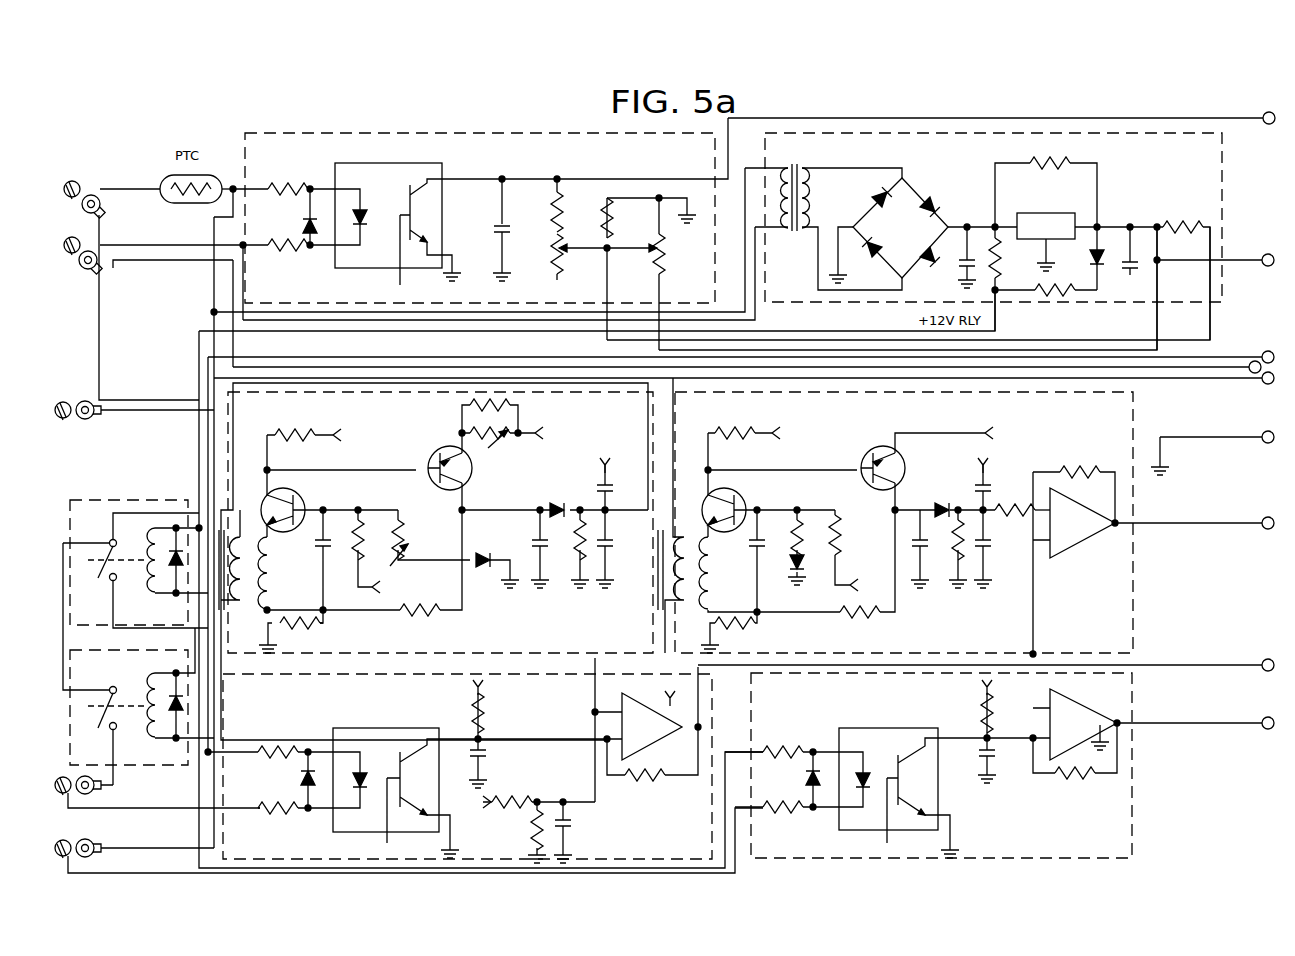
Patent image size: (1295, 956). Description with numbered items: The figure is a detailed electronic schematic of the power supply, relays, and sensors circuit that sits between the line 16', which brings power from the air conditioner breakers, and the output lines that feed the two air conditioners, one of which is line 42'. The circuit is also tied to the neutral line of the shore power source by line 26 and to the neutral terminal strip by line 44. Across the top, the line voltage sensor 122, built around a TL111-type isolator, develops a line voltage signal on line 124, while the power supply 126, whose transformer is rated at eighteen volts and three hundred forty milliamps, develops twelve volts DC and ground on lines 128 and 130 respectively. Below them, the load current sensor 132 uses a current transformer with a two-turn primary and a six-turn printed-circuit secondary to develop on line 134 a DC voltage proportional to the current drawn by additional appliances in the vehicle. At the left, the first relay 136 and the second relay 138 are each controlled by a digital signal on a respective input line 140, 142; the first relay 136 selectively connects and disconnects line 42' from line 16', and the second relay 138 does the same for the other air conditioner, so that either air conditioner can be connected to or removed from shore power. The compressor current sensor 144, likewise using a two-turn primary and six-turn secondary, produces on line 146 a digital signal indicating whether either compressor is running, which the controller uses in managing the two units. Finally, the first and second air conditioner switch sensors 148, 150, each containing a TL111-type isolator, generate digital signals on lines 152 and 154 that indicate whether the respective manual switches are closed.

The line 16' is at (131, 271).
The line 26 is at (145, 245).
The line 44 is at (139, 410).
The line 42' is at (409, 840).
The line voltage sensor 122 is at (675, 133).
The line 124 is at (1250, 127).
The power supply 126 is at (1155, 133).
The line 128 is at (1252, 270).
The line 130 is at (1249, 437).
The load current sensor 132 is at (622, 650).
The line 134 is at (1235, 378).
The first relay 136 is at (172, 500).
The second relay 138 is at (172, 765).
The input line 140 is at (1247, 357).
The input line 142 is at (1172, 367).
The compressor current sensor 144 is at (1104, 650).
The line 146 is at (1249, 523).
The first air conditioner switch sensor 148 is at (1102, 673).
The second air conditioner switch sensor 150 is at (570, 674).
The line 152 is at (1249, 723).
The line 154 is at (1249, 665).